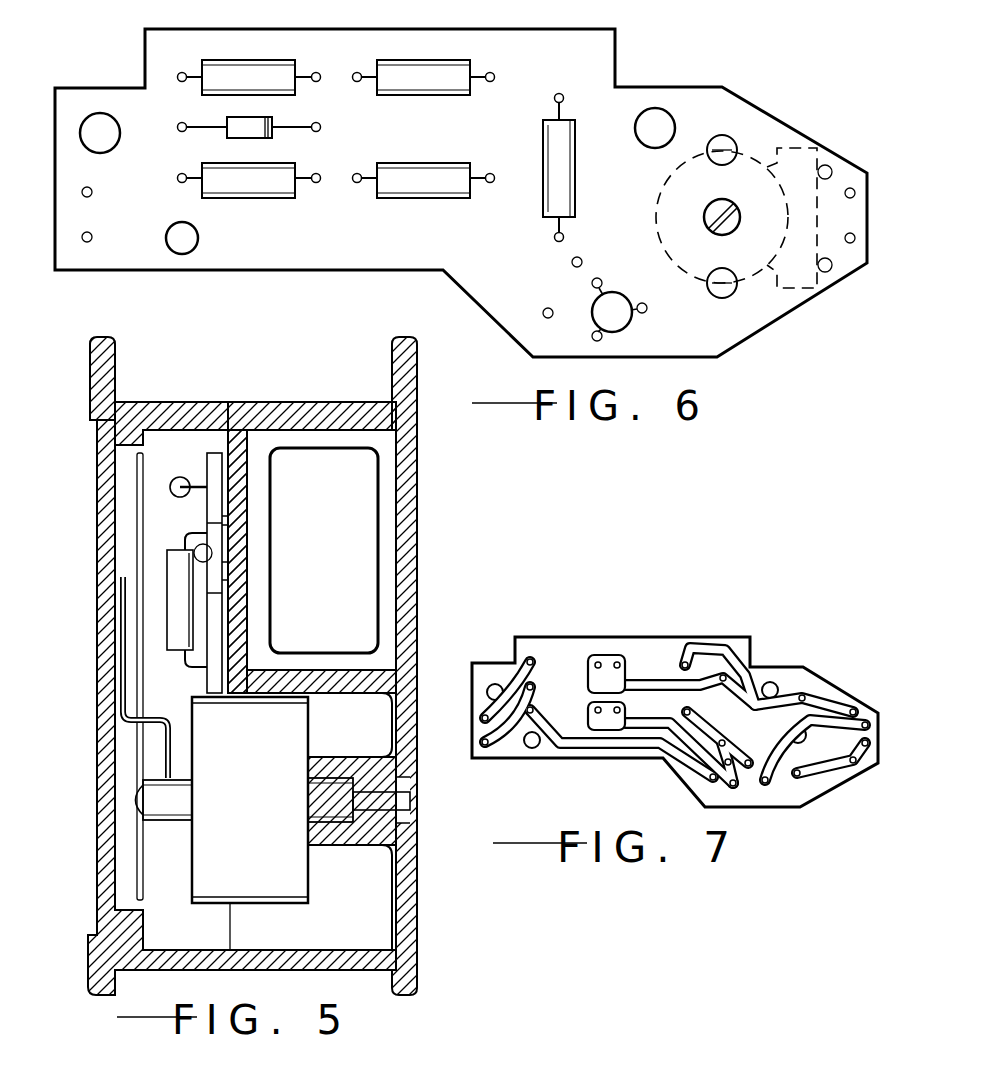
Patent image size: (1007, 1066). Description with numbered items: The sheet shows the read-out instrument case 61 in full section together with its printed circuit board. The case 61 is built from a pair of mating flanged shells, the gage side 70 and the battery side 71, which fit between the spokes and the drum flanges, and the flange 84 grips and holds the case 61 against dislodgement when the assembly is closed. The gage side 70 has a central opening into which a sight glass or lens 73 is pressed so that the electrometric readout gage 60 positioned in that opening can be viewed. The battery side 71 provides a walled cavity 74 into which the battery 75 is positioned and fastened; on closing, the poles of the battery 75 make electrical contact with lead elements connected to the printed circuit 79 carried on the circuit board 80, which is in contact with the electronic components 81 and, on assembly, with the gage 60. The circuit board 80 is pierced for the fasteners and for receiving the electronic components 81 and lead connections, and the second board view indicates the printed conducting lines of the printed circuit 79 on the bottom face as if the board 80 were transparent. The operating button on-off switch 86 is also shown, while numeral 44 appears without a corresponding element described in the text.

In FIG. 5, the electrometric readout gage 60 is at (196, 853).
In FIG. 5, the instrument case 61 is at (215, 665).
In FIG. 5, the gage side shell 70 is at (191, 406).
In FIG. 5, the battery side shell 71 is at (305, 407).
In FIG. 5, the sight glass or lens 73 is at (98, 663).
In FIG. 5, the walled cavity 74 is at (391, 598).
In FIG. 5, the battery 75 is at (368, 542).
In FIG. 6, the printed circuit 79 is at (55, 90).
In FIG. 5, the printed circuit 79 is at (212, 446).
In FIG. 7, the printed circuit 79 is at (781, 642).
In FIG. 6, the circuit board 80 is at (368, 42).
In FIG. 7, the circuit board 80 is at (653, 646).
In FIG. 6, the electronic components 81 is at (621, 323).
In FIG. 5, the flange 84 is at (116, 360).
In FIG. 5, the operating button on-off switch 86 is at (160, 1065).
In FIG. 5, the shaft 44 is at (304, 1058).